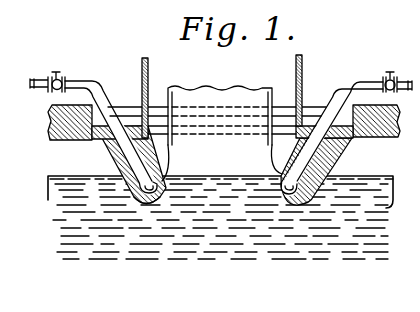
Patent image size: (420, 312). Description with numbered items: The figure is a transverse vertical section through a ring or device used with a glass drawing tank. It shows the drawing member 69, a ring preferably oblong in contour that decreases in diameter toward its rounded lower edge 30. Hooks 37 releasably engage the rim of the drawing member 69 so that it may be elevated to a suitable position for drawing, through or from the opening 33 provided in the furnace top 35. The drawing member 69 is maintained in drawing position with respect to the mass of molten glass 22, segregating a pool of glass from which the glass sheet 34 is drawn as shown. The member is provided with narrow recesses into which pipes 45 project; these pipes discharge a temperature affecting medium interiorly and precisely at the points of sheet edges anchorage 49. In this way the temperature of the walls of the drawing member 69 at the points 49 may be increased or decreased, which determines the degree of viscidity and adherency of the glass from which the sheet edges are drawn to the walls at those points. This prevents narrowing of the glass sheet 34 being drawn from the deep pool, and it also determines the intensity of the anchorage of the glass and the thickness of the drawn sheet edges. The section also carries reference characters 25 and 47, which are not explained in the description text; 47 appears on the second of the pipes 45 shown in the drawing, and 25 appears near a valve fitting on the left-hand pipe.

The molten glass 22 is at (80, 244).
The inlet valve 25 is at (56, 72).
The rounded lower edge 30 is at (147, 200).
The opening 33 is at (115, 118).
The glass sheet 34 is at (148, 72).
The furnace top 35 is at (383, 128).
The hooks 37 is at (317, 122).
The pipes 45 is at (72, 81).
The right supply tube 47 is at (317, 142).
The points of sheet edges anchorage 49 is at (165, 178).
The drawing member 69 is at (97, 152).